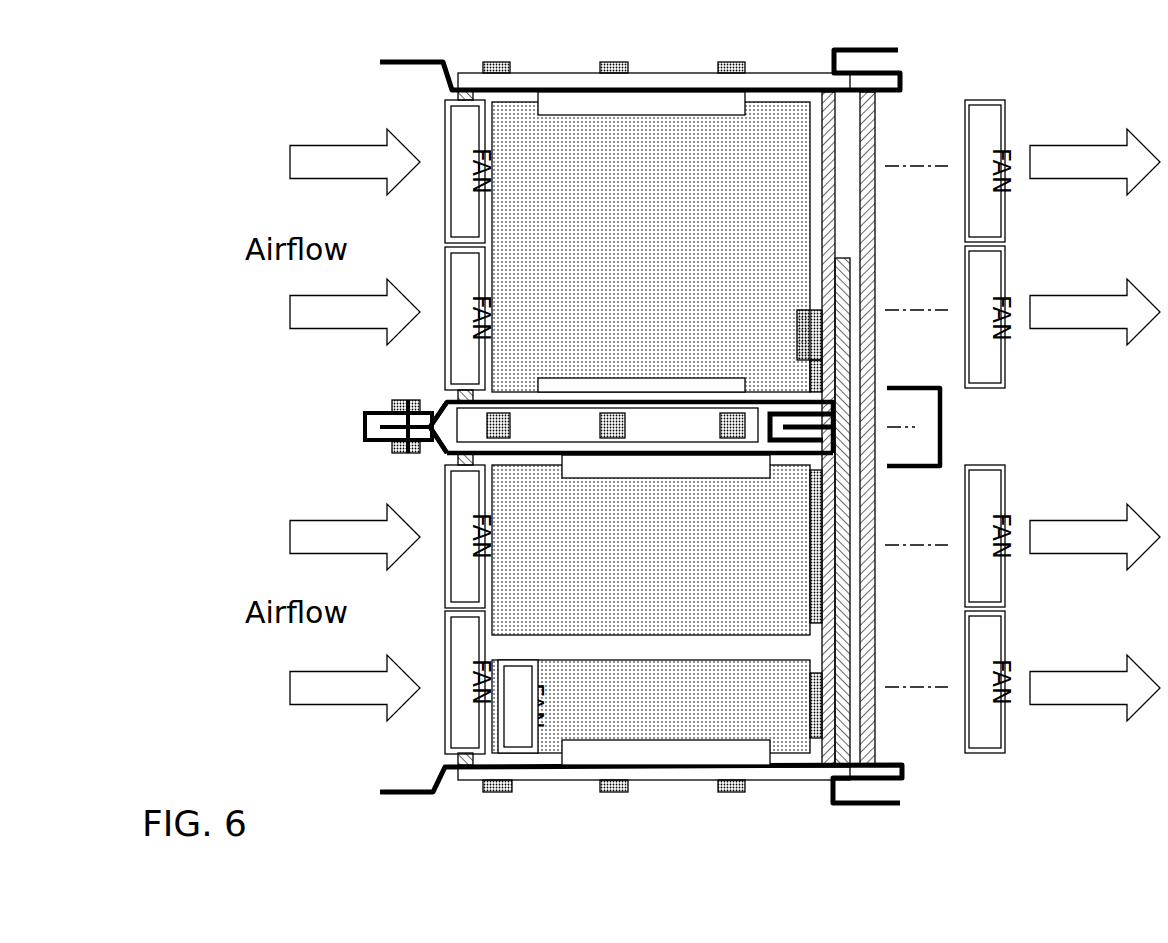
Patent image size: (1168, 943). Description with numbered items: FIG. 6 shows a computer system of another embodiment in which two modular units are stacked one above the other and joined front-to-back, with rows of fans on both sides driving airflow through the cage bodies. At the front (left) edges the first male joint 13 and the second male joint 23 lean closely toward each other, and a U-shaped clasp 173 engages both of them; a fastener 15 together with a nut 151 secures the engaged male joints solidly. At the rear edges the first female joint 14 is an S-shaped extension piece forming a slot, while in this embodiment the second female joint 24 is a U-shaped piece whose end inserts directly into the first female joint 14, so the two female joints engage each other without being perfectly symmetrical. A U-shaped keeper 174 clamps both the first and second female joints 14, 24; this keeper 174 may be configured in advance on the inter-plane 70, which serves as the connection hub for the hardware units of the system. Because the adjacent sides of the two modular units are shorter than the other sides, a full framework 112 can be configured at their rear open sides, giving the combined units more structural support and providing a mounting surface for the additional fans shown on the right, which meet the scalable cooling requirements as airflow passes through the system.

The first male joint 13 is at (433, 405).
The first female joint 14 is at (838, 401).
The fastener 15 is at (392, 452).
The second male joint 23 is at (435, 450).
The second female joint 24 is at (838, 452).
The inter-plane 70 is at (850, 285).
The full framework 112 is at (871, 120).
The nut 151 is at (387, 407).
The U-shaped clasp 173 is at (365, 430).
The U-shaped keeper 174 is at (942, 440).